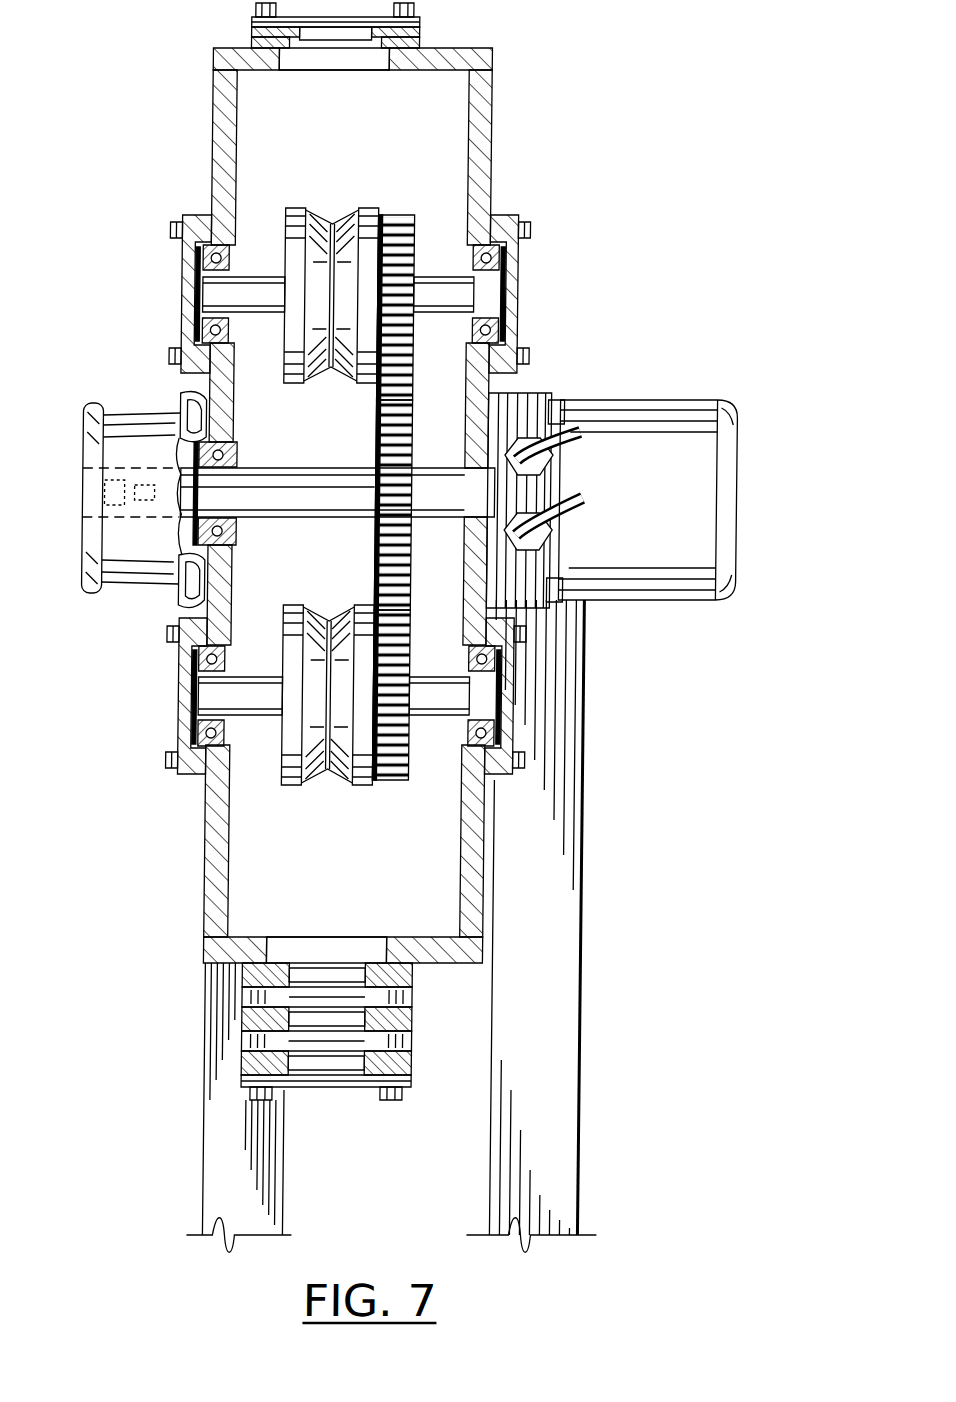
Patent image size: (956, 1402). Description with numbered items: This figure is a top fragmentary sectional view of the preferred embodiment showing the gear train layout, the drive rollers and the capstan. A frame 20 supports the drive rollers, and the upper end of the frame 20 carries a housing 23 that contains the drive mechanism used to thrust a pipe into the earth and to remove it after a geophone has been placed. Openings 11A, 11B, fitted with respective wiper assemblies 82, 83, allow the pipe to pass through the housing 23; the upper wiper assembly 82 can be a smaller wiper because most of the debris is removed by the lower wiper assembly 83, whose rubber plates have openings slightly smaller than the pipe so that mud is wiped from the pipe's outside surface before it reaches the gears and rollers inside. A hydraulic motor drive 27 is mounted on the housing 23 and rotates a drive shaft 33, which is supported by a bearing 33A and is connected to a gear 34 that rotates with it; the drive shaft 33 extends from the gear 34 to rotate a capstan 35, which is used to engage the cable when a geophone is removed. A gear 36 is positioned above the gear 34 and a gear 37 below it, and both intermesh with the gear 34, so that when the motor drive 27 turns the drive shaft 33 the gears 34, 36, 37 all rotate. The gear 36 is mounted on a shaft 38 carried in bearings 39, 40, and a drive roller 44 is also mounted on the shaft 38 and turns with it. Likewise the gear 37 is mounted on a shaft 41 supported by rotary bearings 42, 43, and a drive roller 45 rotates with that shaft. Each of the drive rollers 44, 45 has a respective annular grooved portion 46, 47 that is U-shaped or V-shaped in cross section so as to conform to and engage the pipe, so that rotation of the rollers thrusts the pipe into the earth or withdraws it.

The opening 11A is at (332, 60).
The opening 11B is at (338, 940).
The frame 20 is at (216, 1136).
The housing 23 is at (493, 58).
The motor drive 27 is at (669, 507).
The drive shaft 33 is at (355, 478).
The bearing 33A is at (232, 443).
The gear 34 is at (381, 580).
The capstan 35 is at (110, 594).
The gear 36 is at (392, 214).
The gear 37 is at (412, 780).
The shaft 38 is at (260, 292).
The bearing 39 is at (188, 273).
The bearing 40 is at (518, 273).
The shaft 41 is at (246, 692).
The bearing 42 is at (188, 701).
The bearing 43 is at (515, 730).
The drive roller 44 is at (313, 186).
The drive roller 45 is at (308, 786).
The annular groove 46 is at (335, 224).
The annular groove 47 is at (337, 610).
The wiper assembly 82 is at (425, 1068).
The wiper assembly 83 is at (420, 26).